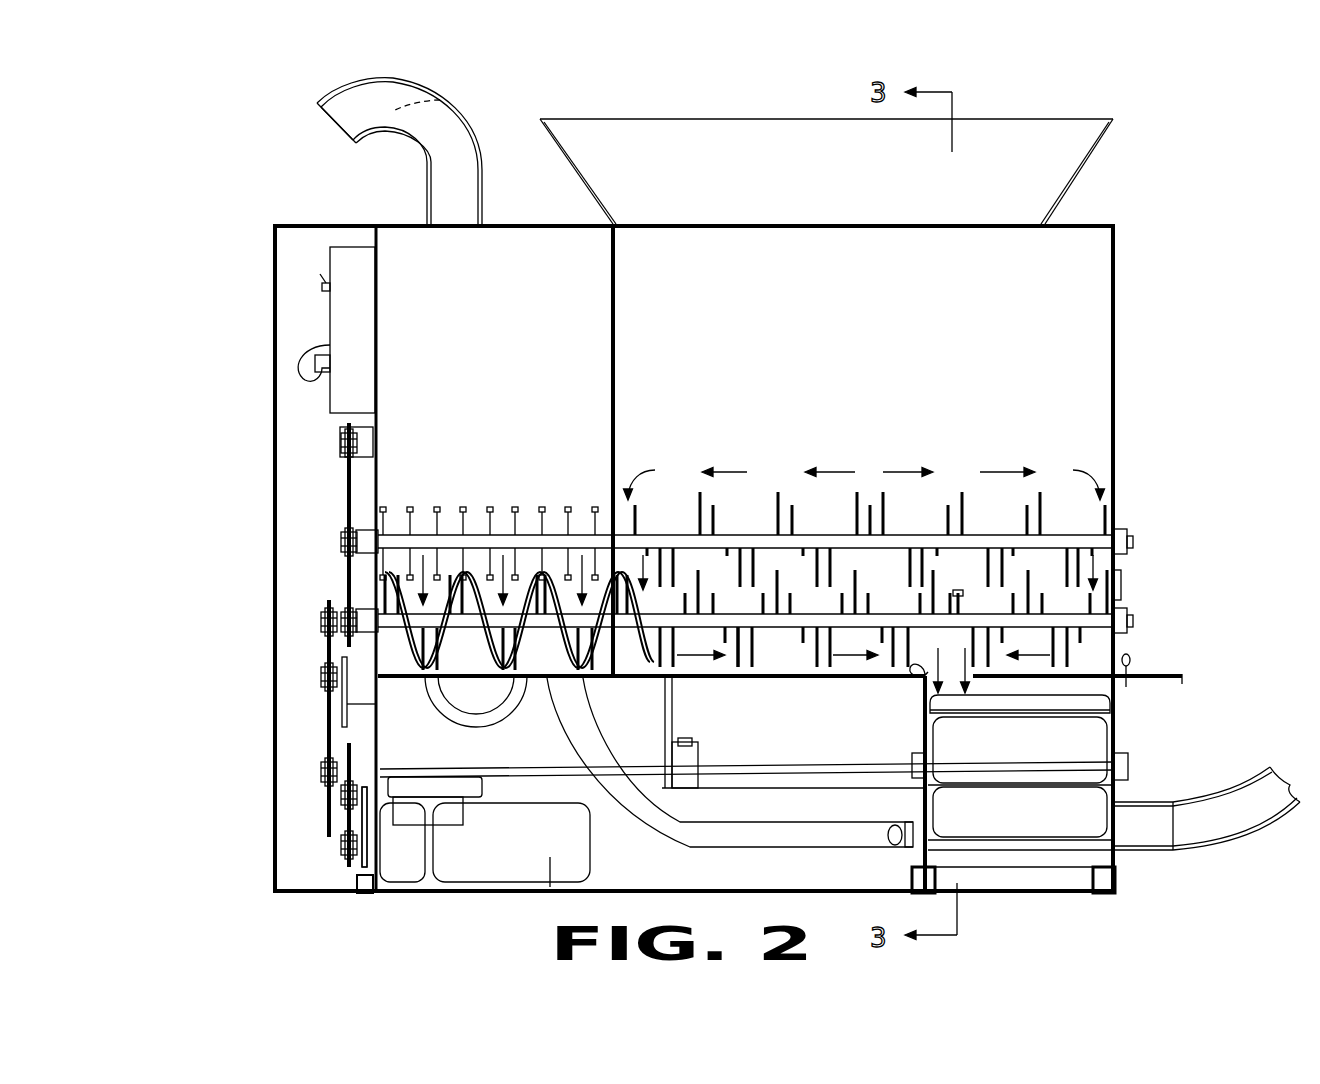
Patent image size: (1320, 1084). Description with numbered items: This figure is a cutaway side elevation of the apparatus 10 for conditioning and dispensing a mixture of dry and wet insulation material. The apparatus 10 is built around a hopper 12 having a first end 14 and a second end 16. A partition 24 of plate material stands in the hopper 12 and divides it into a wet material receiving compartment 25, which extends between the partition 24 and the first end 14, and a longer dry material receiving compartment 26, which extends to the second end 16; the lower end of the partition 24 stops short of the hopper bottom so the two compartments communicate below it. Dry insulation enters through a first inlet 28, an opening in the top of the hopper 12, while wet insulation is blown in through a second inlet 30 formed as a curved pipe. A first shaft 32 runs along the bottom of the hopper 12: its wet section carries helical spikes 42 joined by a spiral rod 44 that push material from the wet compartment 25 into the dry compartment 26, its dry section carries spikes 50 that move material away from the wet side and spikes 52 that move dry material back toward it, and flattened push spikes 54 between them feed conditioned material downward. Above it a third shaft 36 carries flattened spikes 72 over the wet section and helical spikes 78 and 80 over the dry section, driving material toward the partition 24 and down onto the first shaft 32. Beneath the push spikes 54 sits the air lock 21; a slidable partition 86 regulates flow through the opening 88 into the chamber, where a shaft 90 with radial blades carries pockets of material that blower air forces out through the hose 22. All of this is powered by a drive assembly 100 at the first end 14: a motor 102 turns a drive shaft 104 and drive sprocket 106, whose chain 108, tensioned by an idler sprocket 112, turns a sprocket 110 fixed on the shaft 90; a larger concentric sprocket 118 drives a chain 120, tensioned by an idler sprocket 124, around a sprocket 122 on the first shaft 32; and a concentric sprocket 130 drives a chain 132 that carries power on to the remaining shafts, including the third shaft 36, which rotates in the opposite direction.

The apparatus 10 is at (1138, 106).
The hopper 12 is at (1114, 278).
The first end 14 is at (370, 242).
The second end 16 is at (1114, 357).
The air lock 21 is at (1119, 724).
The hose 22 is at (1228, 790).
The partition 24 is at (616, 324).
The wet material receiving compartment 25 is at (505, 349).
The dry material receiving compartment 26 is at (865, 344).
The first inlet 28 is at (1043, 222).
The second inlet 30 is at (453, 104).
The first shaft 32 is at (780, 632).
The third shaft 36 is at (743, 530).
The spikes 42 is at (430, 654).
The spiral rod 44 is at (508, 682).
The spikes 50 is at (738, 675).
The spikes 52 is at (1117, 580).
The push spikes 54 is at (963, 573).
The spikes 72 is at (482, 516).
The spikes 78 is at (700, 497).
The spikes 80 is at (937, 517).
The partition 86 is at (1098, 678).
The opening 88 is at (930, 662).
The shaft 90 is at (790, 762).
The drive assembly 100 is at (295, 832).
The motor 102 is at (513, 860).
The drive shaft 104 is at (362, 855).
The drive sprocket 106 is at (355, 842).
The chain 108 is at (340, 822).
The sprocket 110 is at (340, 748).
The idler sprocket 112 is at (330, 773).
The sprocket 118 is at (340, 793).
The chain 120 is at (328, 735).
The sprocket 122 is at (347, 593).
The idler sprocket 124 is at (328, 677).
The sprocket 130 is at (330, 600).
The chain 132 is at (346, 486).